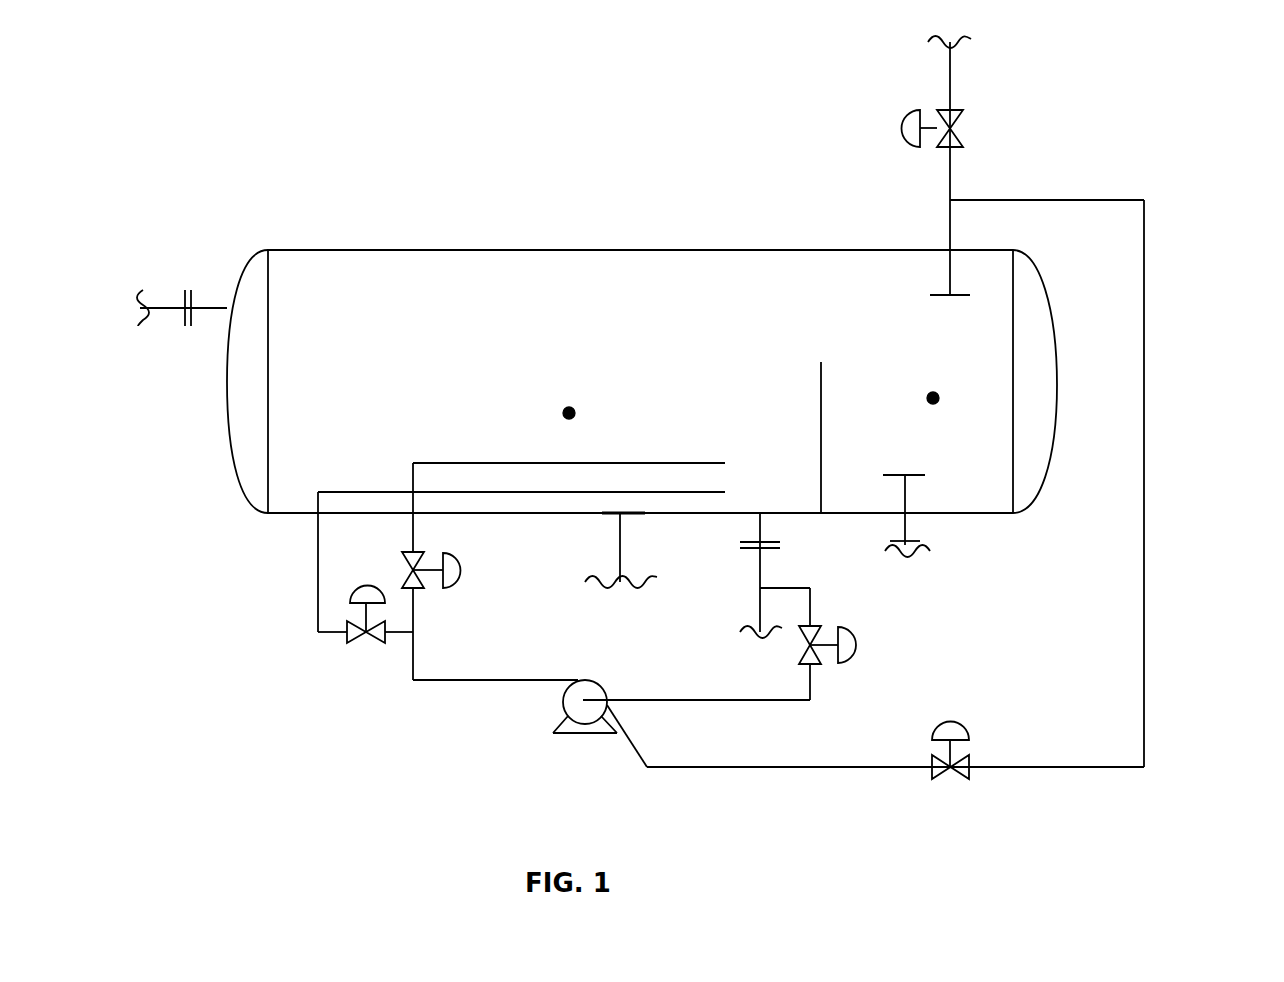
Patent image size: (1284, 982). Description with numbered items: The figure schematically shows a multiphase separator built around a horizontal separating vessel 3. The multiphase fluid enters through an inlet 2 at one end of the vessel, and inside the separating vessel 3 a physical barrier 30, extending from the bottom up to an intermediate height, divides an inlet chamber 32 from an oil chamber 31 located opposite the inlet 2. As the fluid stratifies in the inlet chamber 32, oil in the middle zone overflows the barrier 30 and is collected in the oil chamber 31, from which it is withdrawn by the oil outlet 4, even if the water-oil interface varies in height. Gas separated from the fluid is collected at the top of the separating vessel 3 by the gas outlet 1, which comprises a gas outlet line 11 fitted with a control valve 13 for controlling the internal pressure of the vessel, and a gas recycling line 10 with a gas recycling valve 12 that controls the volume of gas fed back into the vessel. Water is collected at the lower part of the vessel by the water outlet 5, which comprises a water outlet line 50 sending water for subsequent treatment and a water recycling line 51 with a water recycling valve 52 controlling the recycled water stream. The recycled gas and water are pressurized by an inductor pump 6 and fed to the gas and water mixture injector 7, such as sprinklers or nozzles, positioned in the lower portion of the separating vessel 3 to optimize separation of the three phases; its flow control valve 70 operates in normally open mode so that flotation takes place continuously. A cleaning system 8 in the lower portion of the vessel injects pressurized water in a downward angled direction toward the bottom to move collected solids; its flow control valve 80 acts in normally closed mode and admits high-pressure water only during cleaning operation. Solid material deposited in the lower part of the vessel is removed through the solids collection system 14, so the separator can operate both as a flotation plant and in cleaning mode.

The means for collecting a volume of gas 1 is at (950, 275).
The means for introducing the multiphase fluid 2 is at (226, 309).
The separating vessel 3 is at (479, 250).
The means for collecting a volume of oil 4 is at (905, 489).
The means for collecting a volume of water 5 is at (760, 515).
The inductor pump 6 is at (569, 708).
The means for injecting a mixture of pressurized gas and water 7 is at (628, 463).
The cleaning system 8 is at (379, 492).
The gas recycling line 10 is at (1096, 200).
The gas outlet line 11 is at (953, 165).
The gas recycling valve 12 is at (963, 767).
The control valve 13 is at (912, 122).
The means for collecting solid material 14 is at (612, 515).
The barrier 30 is at (822, 397).
The oil chamber 31 is at (933, 398).
The inlet chamber 32 is at (569, 413).
The water outlet line 50 is at (762, 603).
The water recycling line 51 is at (788, 590).
The water recycling valve 52 is at (858, 645).
The flow control valve 70 is at (448, 588).
The flow control valve 80 is at (353, 603).